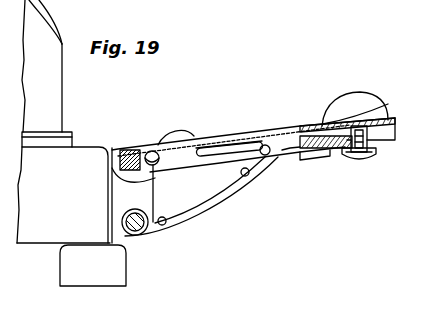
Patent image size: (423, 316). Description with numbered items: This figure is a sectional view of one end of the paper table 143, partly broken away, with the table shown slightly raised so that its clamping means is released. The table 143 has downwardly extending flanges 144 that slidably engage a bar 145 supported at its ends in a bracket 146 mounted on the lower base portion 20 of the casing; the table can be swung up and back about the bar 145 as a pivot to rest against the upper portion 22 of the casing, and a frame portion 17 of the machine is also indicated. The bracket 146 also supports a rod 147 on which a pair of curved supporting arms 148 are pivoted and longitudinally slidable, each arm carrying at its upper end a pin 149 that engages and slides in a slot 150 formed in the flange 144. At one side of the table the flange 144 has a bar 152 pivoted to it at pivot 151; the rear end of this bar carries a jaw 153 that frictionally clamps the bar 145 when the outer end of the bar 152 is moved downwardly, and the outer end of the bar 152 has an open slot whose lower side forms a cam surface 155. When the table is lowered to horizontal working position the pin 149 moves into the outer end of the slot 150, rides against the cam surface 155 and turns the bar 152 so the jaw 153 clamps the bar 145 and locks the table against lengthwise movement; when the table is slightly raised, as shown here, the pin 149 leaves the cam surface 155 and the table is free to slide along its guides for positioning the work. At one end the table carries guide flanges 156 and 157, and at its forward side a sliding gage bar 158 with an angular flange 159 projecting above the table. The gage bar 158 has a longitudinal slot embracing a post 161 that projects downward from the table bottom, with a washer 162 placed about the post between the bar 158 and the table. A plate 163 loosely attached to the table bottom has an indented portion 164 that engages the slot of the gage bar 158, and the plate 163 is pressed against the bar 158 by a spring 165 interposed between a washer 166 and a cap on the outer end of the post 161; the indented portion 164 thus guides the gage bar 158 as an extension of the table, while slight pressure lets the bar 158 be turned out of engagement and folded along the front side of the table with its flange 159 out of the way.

The frame 17 is at (422, 210).
The lower base portion 20 is at (71, 216).
The upper portion 22 is at (47, 73).
The table 143 is at (316, 126).
The flanges 144 is at (176, 166).
The bar 145 is at (126, 150).
The bracket 146 is at (114, 199).
The rod 147 is at (123, 224).
The curved supporting arms 148 is at (196, 214).
The pin 149 is at (266, 145).
The slot 150 is at (222, 148).
The pivot 151 is at (151, 150).
The bar 152 is at (245, 135).
The jaw 153 is at (129, 170).
The cam surface 155 is at (283, 149).
The guide flange 156 is at (183, 134).
The guide flange 157 is at (377, 108).
The sliding gage bar 158 is at (377, 130).
The angular flange 159 is at (336, 102).
The post 161 is at (352, 126).
The washer 162 is at (386, 132).
The plate 163 is at (323, 146).
The indented portion 164 is at (323, 152).
The spring 165 is at (376, 152).
The washer 166 is at (345, 152).